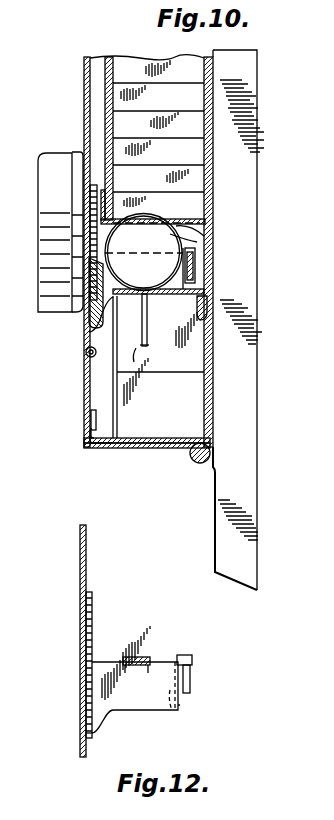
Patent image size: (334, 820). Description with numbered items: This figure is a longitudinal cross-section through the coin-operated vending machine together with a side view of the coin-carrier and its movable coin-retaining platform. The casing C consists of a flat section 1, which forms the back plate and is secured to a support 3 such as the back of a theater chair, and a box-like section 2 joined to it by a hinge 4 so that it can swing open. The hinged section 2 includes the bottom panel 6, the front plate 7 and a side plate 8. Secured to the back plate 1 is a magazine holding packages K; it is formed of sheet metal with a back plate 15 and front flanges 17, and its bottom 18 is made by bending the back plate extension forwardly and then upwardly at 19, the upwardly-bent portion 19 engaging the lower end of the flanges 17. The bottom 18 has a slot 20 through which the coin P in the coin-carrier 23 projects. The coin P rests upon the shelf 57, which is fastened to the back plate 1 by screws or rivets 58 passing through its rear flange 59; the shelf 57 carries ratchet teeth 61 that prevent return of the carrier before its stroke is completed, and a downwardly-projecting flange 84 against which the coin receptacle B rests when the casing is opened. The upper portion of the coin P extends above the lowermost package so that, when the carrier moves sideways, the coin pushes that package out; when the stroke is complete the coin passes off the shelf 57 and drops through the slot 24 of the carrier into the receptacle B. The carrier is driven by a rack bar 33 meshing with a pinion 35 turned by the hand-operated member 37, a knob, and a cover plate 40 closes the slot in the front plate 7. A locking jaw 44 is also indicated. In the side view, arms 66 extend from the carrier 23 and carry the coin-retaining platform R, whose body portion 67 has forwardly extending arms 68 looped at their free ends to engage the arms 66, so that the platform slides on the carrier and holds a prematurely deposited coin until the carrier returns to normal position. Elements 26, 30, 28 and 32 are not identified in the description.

In FIG. 10, the packages K is at (145, 92).
In FIG. 10, the front flanges 17 is at (108, 97).
In FIG. 10, the upwardly-bent portion 19 is at (103, 196).
In FIG. 10, the back plate 15 is at (200, 126).
In FIG. 10, the support 3 is at (222, 547).
In FIG. 10, the flat section 1 is at (213, 423).
In FIG. 10, the outer wall 26 is at (84, 384).
In FIG. 10, the box-like section 2 is at (127, 448).
In FIG. 10, the bottom panel 6 is at (156, 448).
In FIG. 10, the casing C is at (100, 450).
In FIG. 10, the side plate 8 is at (104, 364).
In FIG. 10, the pivot pin 30 is at (66, 362).
In FIG. 10, the receptacle B is at (112, 389).
In FIG. 10, the front plate 7 is at (86, 408).
In FIG. 12, the front plate 7 is at (82, 570).
In FIG. 10, the corner piece 28 is at (89, 432).
In FIG. 10, the coin P is at (145, 242).
In FIG. 10, the bottom 18 is at (206, 226).
In FIG. 10, the slot 20 is at (199, 243).
In FIG. 10, the coin-retaining platform R is at (196, 276).
In FIG. 10, the screws or rivets 58 is at (199, 302).
In FIG. 10, the coin-carrier 23 is at (141, 300).
In FIG. 12, the coin-carrier 23 is at (155, 702).
In FIG. 10, the ratchet teeth 61 is at (149, 344).
In FIG. 10, the shelf 57 is at (138, 352).
In FIG. 10, the rear flange 59 is at (198, 336).
In FIG. 10, the downwardly-projecting flange 84 is at (136, 382).
In FIG. 10, the rack bar 33 is at (88, 302).
In FIG. 12, the rack bar 33 is at (82, 692).
In FIG. 10, the slot 24 is at (88, 322).
In FIG. 12, the slot 24 is at (182, 715).
In FIG. 10, the hand-operated member 37 is at (52, 170).
In FIG. 10, the cover plate 40 is at (78, 153).
In FIG. 10, the pinion 35 is at (85, 240).
In FIG. 12, the pinion 35 is at (93, 619).
In FIG. 10, the locking jaw 44 is at (7, 119).
In FIG. 10, the hinge 4 is at (196, 463).
In FIG. 12, the lug 32 is at (82, 734).
In FIG. 12, the arms 66 is at (138, 657).
In FIG. 12, the arms 68 is at (165, 661).
In FIG. 12, the body portion 67 is at (193, 682).